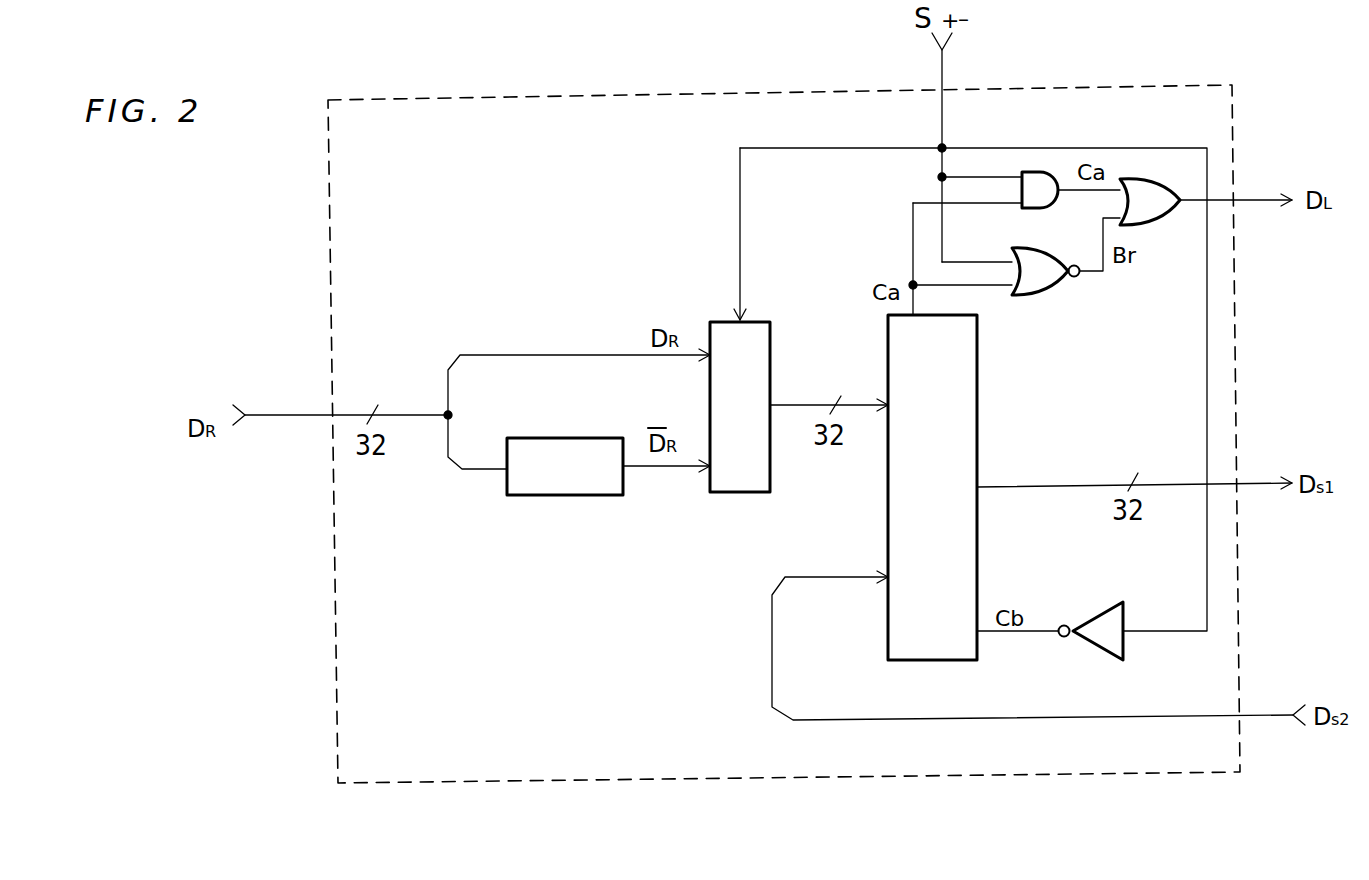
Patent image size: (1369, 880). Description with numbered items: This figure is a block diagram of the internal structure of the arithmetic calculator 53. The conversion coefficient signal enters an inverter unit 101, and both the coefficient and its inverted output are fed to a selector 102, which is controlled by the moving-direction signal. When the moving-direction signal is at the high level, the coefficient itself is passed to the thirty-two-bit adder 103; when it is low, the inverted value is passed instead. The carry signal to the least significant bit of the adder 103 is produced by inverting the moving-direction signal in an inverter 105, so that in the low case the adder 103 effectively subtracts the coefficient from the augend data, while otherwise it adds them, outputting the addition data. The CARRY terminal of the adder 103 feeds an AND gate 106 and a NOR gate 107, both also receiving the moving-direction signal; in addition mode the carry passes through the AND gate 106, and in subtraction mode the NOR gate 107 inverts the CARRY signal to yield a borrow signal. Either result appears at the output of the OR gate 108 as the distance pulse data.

The arithmetic calculator 53 is at (1122, 82).
The inverter unit 101 is at (553, 438).
The selector 102 is at (770, 333).
The 32-bits adder 103 is at (977, 389).
The inverter 105 is at (1125, 612).
The AND gate 106 is at (1032, 210).
The NOR gate 107 is at (1058, 290).
The OR gate 108 is at (1158, 225).